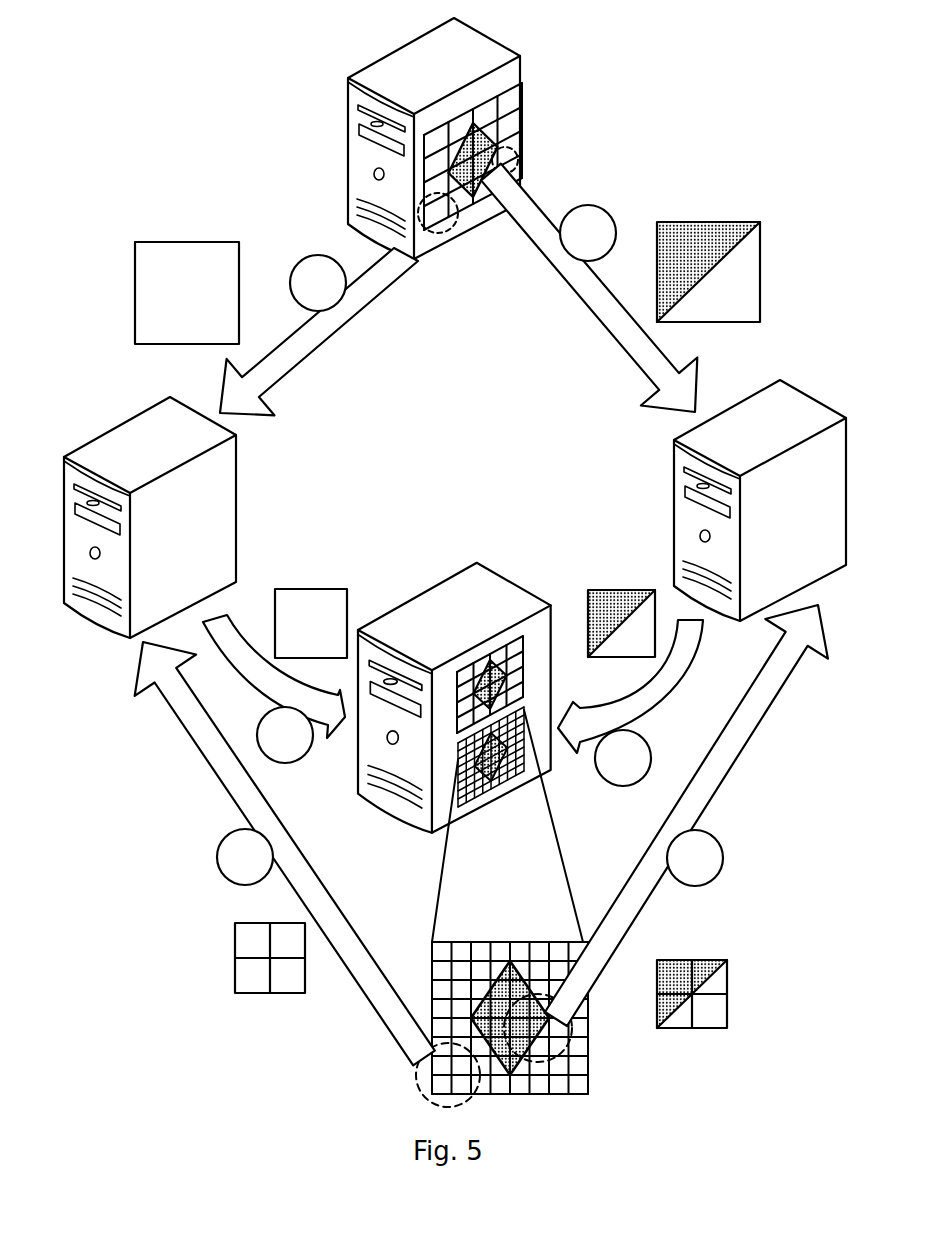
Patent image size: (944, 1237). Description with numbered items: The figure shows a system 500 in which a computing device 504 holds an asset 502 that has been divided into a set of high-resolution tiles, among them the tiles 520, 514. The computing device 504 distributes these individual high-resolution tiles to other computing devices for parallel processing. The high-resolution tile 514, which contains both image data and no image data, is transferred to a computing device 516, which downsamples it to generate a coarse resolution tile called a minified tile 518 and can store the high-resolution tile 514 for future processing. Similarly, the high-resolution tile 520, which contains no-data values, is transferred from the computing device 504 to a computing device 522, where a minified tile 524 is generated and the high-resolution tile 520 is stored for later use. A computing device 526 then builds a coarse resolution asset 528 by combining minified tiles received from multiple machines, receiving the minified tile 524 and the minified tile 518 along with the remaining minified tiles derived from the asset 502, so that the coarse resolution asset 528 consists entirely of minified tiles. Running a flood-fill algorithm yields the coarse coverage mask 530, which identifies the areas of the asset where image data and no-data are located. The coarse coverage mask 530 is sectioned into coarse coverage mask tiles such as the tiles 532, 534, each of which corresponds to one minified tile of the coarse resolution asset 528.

The system 500 is at (112, 83).
The asset 502 is at (522, 97).
The computing device 504 is at (507, 43).
The high-resolution tile 514 is at (759, 222).
The computing device 516 is at (812, 400).
The minified tile 518 is at (617, 590).
The high-resolution tile 520 is at (135, 242).
The computing device 522 is at (123, 421).
The minified tile 524 is at (312, 589).
The computing device 526 is at (487, 563).
The coarse resolution asset 528 is at (523, 673).
The coarse coverage mask 530 is at (490, 942).
The coarse coverage mask tile 532 is at (725, 960).
The coarse coverage mask tile 534 is at (235, 923).